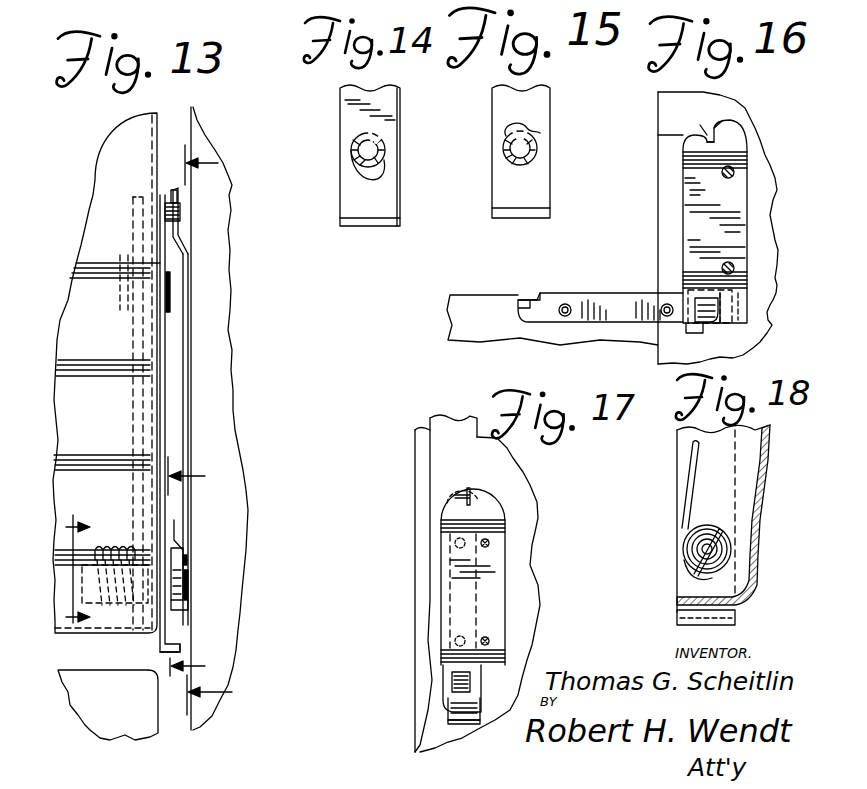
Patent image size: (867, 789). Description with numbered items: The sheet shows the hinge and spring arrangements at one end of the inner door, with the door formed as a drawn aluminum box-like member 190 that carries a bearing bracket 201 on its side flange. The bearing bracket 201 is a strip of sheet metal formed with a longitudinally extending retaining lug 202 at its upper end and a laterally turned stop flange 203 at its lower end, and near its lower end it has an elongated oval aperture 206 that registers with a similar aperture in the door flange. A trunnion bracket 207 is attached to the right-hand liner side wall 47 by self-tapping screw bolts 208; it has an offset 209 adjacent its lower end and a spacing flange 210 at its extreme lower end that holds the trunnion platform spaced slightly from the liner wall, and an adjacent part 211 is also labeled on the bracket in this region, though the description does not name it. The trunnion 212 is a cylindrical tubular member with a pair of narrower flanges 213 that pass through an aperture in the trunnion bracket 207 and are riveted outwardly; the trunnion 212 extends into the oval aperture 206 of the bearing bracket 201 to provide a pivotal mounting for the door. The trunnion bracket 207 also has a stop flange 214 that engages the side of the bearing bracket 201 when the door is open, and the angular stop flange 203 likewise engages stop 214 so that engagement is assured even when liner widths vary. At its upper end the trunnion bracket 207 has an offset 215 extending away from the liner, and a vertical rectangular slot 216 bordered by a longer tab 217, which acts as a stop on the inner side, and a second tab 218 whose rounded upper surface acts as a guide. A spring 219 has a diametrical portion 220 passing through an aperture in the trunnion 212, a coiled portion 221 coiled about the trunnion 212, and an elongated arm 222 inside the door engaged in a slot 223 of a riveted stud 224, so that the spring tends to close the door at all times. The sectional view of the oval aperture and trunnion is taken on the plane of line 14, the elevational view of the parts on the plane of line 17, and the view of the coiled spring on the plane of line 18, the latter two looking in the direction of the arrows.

In FIG. 13, the section line 14— 14 is at (203, 569).
In FIG. 13, the section line 17— 17 is at (226, 430).
In FIG. 13, the section line 18— 18 is at (54, 575).
In FIG. 13, the side wall 47 is at (197, 323).
In FIG. 13, the box-like member 190 is at (89, 184).
In FIG. 17, the box-like member 190 is at (430, 452).
In FIG. 18, the box-like member 190 is at (769, 506).
In FIG. 13, the bearing bracket 201 is at (166, 424).
In FIG. 15, the bearing bracket 201 is at (535, 99).
In FIG. 16, the bearing bracket 201 is at (610, 309).
In FIG. 17, the bearing bracket 201 is at (450, 603).
In FIG. 13, the retaining lug 202 is at (181, 213).
In FIG. 16, the retaining lug 202 is at (538, 298).
In FIG. 17, the retaining lug 202 is at (458, 497).
In FIG. 13, the stop flange 203 is at (172, 648).
In FIG. 15, the stop flange 203 is at (534, 209).
In FIG. 16, the stop flange 203 is at (750, 313).
In FIG. 17, the stop flange 203 is at (450, 723).
In FIG. 18, the stop flange 203 is at (680, 623).
In FIG. 14, the oval aperture 206 is at (383, 176).
In FIG. 15, the oval aperture 206 is at (540, 134).
In FIG. 13, the trunnion bracket 207 is at (189, 368).
In FIG. 16, the trunnion bracket 207 is at (716, 219).
In FIG. 17, the trunnion bracket 207 is at (507, 569).
In FIG. 16, the self-tapping screw bolt 208 is at (732, 171).
In FIG. 13, the offset 209 is at (185, 542).
In FIG. 13, the spacing flange 210 is at (185, 607).
In FIG. 16, the spacing flange 210 is at (692, 335).
In FIG. 17, the spacing flange 210 is at (450, 711).
In FIG. 13, the lug 211 is at (182, 561).
In FIG. 13, the trunnion 212 is at (100, 548).
In FIG. 15, the trunnion 212 is at (543, 151).
In FIG. 18, the trunnion 212 is at (697, 552).
In FIG. 13, the flanges 213 is at (187, 579).
In FIG. 13, the stop flange 214 is at (177, 531).
In FIG. 16, the stop flange 214 is at (740, 300).
In FIG. 17, the stop flange 214 is at (500, 672).
In FIG. 13, the offset 215 is at (182, 250).
In FIG. 16, the offset 215 is at (718, 162).
In FIG. 16, the vertical rectangular slot 216 is at (710, 136).
In FIG. 16, the tab 217 is at (718, 128).
In FIG. 16, the second tab 218 is at (662, 137).
In FIG. 13, the spring 219 is at (133, 398).
In FIG. 18, the diametrical portion 220 is at (692, 571).
In FIG. 13, the coiled portion 221 is at (125, 606).
In FIG. 18, the coiled portion 221 is at (712, 527).
In FIG. 13, the elongated arm 222 is at (131, 426).
In FIG. 18, the elongated arm 222 is at (688, 468).
In FIG. 13, the slot 223 is at (135, 313).
In FIG. 13, the riveted stud 224 is at (128, 292).